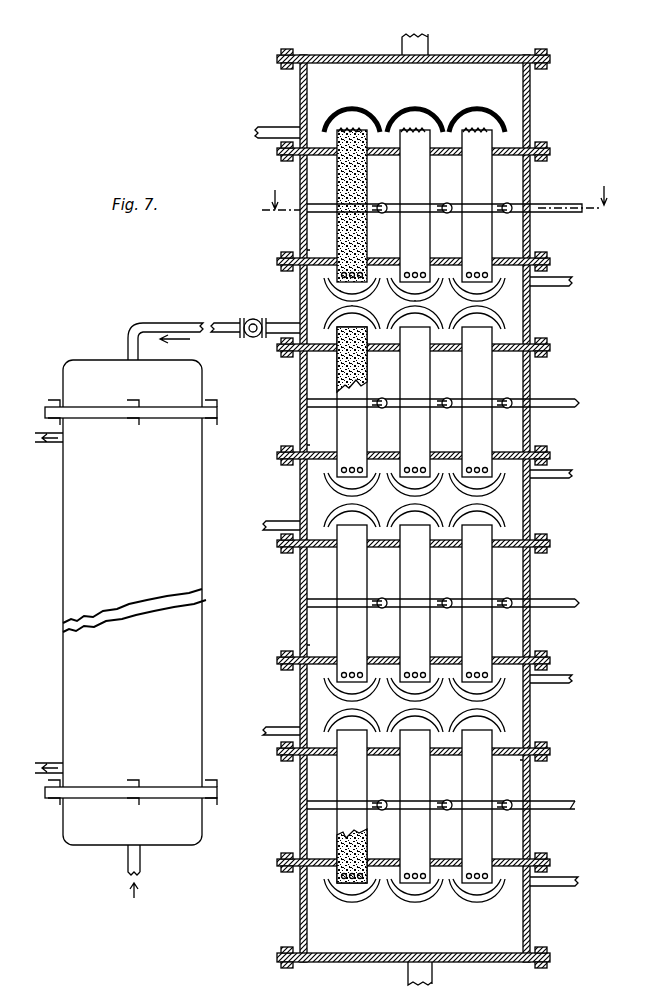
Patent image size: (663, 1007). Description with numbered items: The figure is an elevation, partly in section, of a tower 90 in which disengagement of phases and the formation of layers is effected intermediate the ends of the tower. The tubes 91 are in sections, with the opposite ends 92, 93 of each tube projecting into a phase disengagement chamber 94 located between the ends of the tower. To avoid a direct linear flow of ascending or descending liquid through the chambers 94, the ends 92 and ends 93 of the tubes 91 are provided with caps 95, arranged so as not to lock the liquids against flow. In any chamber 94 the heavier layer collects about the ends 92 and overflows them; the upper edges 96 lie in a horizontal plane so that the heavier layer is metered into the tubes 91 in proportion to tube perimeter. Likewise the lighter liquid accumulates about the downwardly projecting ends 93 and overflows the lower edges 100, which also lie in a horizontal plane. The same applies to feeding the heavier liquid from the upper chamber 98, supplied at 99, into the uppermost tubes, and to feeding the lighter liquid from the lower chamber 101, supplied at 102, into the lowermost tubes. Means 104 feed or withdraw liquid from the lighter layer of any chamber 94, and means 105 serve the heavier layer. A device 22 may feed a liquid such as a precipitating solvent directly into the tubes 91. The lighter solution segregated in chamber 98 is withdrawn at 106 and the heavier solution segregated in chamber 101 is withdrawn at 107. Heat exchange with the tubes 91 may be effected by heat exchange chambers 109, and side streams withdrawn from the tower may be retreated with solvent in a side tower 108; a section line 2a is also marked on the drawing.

The device 22 is at (566, 204).
The tower 90 is at (298, 292).
The tubes 91 is at (424, 198).
The ends 92 is at (438, 130).
The ends 93 is at (430, 484).
The phase disengagement chamber 94 is at (530, 330).
The caps 95 is at (462, 296).
The upper edges 96 is at (362, 324).
The chamber 98 is at (492, 68).
The heavier liquid feed 99 is at (270, 126).
The lower edges 100 is at (345, 480).
The chamber 101 is at (338, 950).
The lighter liquid feed 102 is at (576, 880).
The means for feeding or withdrawing liquid from the lighter layer 104 is at (562, 284).
The means for feeding or withdrawing liquid from the heavier layer 105 is at (259, 338).
The lighter solution withdrawal 106 is at (428, 46).
The heavier solution withdrawal 107 is at (420, 980).
The side tower 108 is at (118, 574).
The heat exchange chambers 109 is at (310, 233).
The section line 2a is at (437, 203).